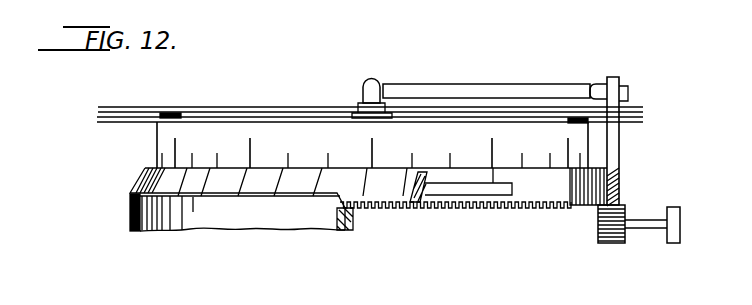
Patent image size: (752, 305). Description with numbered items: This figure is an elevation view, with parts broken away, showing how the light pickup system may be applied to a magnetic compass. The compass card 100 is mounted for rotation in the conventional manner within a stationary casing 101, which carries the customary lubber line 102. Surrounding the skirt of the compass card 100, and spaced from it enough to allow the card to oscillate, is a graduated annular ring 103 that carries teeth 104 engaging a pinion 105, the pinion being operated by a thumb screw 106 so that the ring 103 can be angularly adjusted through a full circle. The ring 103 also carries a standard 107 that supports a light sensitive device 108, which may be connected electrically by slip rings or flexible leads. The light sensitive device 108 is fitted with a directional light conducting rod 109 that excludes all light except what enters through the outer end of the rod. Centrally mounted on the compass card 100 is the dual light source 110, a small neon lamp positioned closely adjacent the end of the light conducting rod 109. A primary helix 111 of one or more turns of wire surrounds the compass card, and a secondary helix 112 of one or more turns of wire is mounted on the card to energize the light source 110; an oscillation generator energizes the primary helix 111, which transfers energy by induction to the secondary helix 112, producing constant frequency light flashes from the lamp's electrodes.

The compass card 100 is at (277, 130).
The stationary casing 101 is at (130, 216).
The lubber line 102 is at (247, 224).
The graduated annular ring 103 is at (420, 202).
The teeth 104 is at (372, 208).
The pinion 105 is at (607, 243).
The thumb screw 106 is at (680, 210).
The standard 107 is at (621, 149).
The light sensitive device 108 is at (598, 86).
The light conducting rod 109 is at (474, 84).
The dual light source 110 is at (372, 80).
The primary helix 111 is at (100, 108).
The secondary helix 112 is at (182, 107).